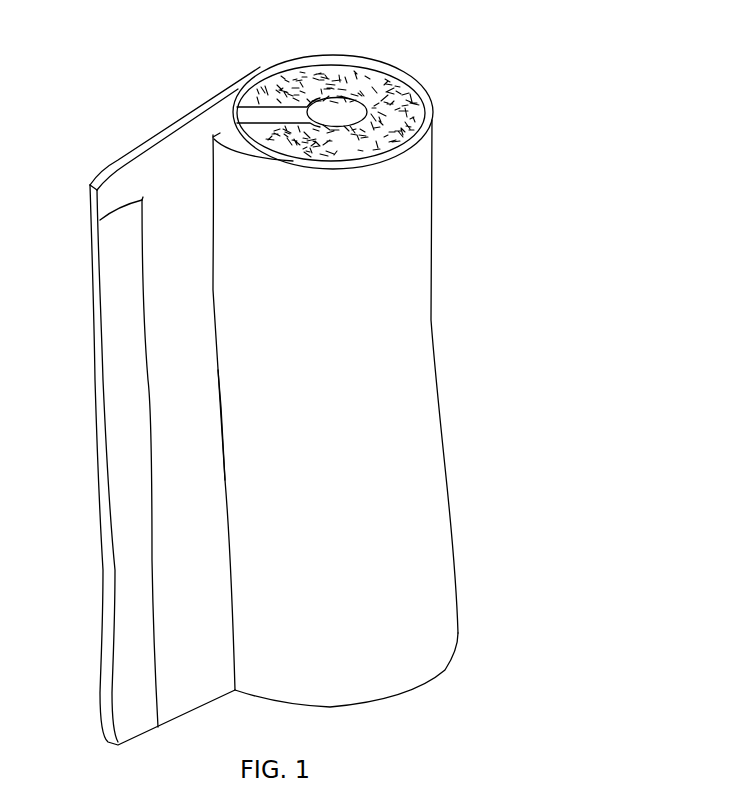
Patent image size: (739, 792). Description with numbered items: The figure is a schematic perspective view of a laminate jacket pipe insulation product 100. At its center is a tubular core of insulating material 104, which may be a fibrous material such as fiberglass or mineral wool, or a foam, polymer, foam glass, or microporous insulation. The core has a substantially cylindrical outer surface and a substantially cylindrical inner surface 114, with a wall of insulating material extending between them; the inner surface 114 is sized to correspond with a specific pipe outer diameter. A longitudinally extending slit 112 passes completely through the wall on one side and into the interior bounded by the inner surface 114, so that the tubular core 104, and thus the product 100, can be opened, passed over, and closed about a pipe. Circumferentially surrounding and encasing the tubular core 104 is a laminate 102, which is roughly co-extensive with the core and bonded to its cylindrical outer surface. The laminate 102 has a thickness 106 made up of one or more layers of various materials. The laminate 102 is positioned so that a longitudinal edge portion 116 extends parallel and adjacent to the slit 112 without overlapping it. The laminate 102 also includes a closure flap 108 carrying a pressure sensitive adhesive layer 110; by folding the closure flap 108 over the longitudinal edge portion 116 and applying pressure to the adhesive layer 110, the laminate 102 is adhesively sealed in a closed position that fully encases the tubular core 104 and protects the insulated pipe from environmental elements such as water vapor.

The laminate jacket pipe insulation product 100 is at (486, 92).
The laminate 102 is at (427, 467).
The tubular core of insulating material 104 is at (432, 124).
The thickness 106 is at (252, 155).
The closure flap 108 is at (156, 176).
The pressure sensitive adhesive layer 110 is at (127, 627).
The longitudinally extending slit 112 is at (257, 108).
The cylindrical inner surface 114 is at (352, 108).
The longitudinal edge portion 116 is at (230, 441).